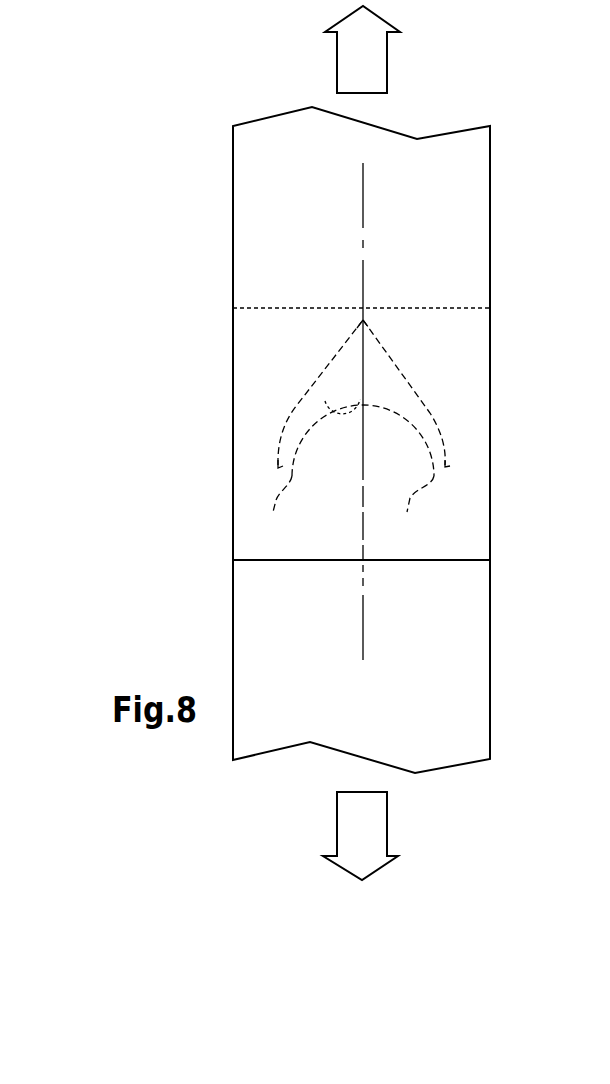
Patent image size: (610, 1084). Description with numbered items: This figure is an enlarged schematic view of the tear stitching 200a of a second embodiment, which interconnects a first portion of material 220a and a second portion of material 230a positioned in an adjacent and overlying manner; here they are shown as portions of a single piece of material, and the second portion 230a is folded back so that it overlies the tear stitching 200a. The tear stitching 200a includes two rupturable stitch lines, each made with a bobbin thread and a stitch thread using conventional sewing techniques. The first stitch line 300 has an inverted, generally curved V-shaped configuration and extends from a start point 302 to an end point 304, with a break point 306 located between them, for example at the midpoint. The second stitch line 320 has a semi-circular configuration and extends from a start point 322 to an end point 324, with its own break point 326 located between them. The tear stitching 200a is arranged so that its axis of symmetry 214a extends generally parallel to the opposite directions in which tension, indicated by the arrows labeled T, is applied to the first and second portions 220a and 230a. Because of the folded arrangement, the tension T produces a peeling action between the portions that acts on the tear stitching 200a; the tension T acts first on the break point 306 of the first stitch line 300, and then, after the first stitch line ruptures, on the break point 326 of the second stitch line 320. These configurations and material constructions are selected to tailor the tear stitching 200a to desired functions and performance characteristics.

The tear stitching 200a is at (445, 367).
The first portion of material 220a is at (455, 207).
The second portion of material 230a is at (438, 658).
The axis of symmetry 214a is at (362, 606).
The first stitch line 300 is at (330, 362).
The break point 306 is at (365, 318).
The start point 302 is at (277, 465).
The end point 304 is at (447, 466).
The second stitch line 320 is at (309, 423).
The start point 322 is at (273, 510).
The end point 324 is at (413, 510).
The break point 326 is at (327, 405).
The tension T is at (368, 57).